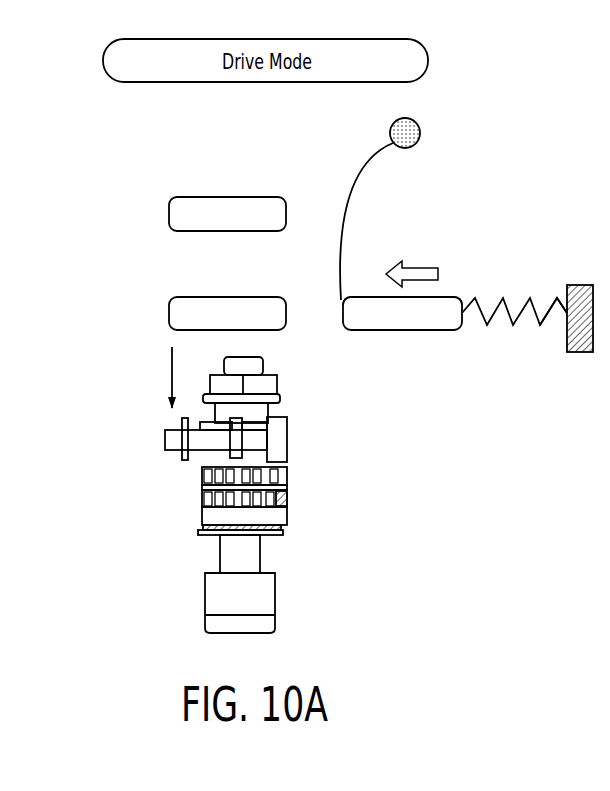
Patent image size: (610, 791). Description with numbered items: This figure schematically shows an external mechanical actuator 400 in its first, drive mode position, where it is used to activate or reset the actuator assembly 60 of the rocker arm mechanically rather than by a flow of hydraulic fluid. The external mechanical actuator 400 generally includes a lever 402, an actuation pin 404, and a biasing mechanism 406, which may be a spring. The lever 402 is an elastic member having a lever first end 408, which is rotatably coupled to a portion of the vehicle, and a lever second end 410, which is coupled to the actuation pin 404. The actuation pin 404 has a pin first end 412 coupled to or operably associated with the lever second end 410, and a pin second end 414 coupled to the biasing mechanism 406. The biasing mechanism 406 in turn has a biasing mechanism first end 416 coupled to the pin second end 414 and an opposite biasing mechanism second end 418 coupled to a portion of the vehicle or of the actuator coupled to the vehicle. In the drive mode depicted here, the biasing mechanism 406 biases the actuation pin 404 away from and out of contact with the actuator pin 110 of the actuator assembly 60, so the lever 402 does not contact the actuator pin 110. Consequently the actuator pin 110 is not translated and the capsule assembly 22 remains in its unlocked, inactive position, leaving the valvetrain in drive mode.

The external mechanical actuator 400 is at (480, 97).
The lever 402 is at (358, 172).
The actuation pin 404 is at (413, 325).
The biasing mechanism 406 is at (541, 322).
The lever first end 408 is at (421, 110).
The lever second end 410 is at (331, 298).
The pin first end 412 is at (353, 308).
The pin second end 414 is at (441, 308).
The biasing mechanism first end 416 is at (468, 318).
The biasing mechanism second end 418 is at (558, 300).
The actuator pin 110 is at (214, 310).
The capsule assembly 22 is at (295, 380).
The actuator assembly 60 is at (303, 419).